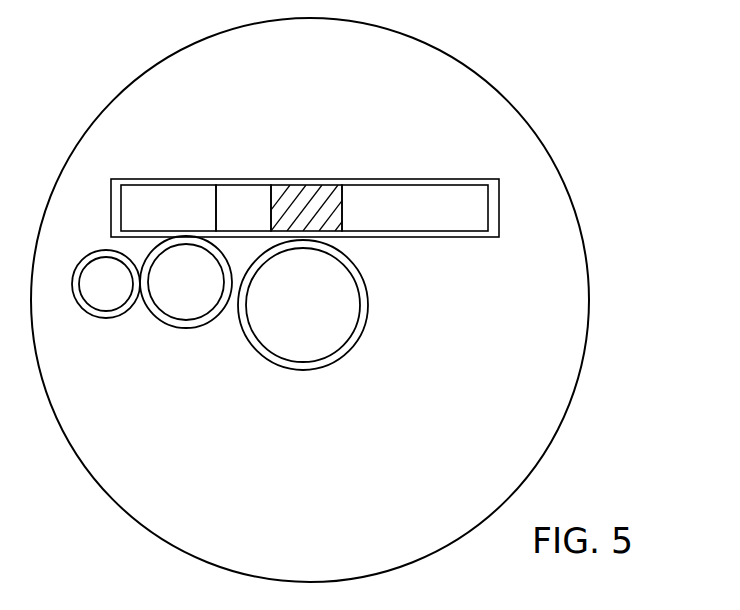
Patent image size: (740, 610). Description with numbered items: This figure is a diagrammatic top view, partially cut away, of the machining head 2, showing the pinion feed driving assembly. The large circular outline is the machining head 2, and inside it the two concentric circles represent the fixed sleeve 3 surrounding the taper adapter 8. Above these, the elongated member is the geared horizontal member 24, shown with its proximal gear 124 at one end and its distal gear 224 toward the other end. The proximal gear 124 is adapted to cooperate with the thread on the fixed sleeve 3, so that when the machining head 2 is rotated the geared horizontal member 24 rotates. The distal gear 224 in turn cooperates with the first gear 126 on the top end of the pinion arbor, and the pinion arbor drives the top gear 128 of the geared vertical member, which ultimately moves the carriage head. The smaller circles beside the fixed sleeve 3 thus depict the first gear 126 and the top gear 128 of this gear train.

The machining head 2 is at (562, 342).
The distal gear 224 is at (153, 195).
The geared horizontal member 24 is at (245, 192).
The proximal gear 124 is at (317, 193).
The top gear 128 is at (98, 297).
The first gear 126 is at (183, 307).
The fixed sleeve 3 is at (368, 298).
The taper adapter 8 is at (343, 328).